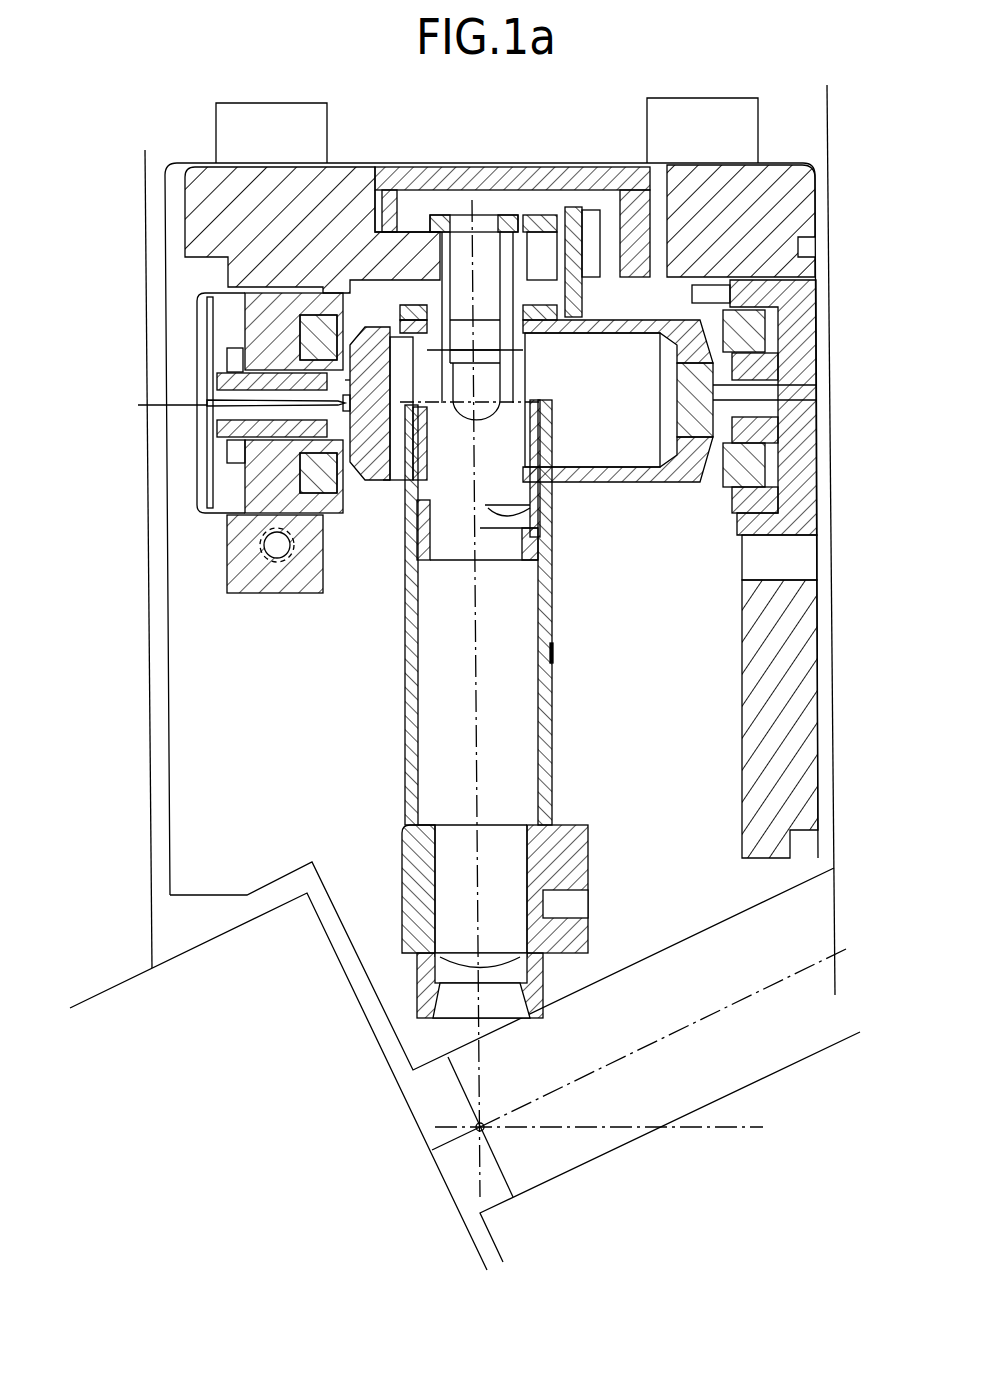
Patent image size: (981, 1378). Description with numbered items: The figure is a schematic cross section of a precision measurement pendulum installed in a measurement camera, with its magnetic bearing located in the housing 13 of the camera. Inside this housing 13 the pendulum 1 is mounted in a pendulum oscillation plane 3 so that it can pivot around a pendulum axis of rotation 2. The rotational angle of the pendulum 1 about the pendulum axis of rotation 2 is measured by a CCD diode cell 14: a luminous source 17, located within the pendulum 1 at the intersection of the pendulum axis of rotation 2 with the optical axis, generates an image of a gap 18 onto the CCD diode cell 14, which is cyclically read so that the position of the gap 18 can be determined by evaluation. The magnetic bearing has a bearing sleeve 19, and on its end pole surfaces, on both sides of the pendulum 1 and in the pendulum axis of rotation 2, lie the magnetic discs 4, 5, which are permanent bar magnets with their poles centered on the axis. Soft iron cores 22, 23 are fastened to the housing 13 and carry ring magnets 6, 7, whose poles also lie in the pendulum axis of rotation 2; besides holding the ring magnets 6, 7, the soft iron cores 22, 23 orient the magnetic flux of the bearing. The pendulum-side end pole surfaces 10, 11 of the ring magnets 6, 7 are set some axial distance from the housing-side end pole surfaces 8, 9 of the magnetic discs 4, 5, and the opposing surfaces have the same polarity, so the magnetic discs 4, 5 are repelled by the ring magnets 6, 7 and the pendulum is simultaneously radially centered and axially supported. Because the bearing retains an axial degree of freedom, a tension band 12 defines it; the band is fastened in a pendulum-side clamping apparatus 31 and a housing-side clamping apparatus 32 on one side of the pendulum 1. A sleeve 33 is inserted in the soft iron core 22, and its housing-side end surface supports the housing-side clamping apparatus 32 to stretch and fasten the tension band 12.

The pendulum 1 is at (547, 700).
The pendulum axis of rotation 2 is at (560, 402).
The pendulum oscillation plane 3 is at (485, 600).
The magnetic disc 4 is at (383, 482).
The magnetic disc 5 is at (680, 467).
The ring magnet 6 is at (243, 333).
The ring magnet 7 is at (753, 332).
The housing-side end pole surface 8 is at (812, 387).
The housing-side end pole surface 9 is at (367, 380).
The pendulum-side end pole surface 10 is at (352, 290).
The pendulum-side end pole surface 11 is at (727, 504).
The tension band 12 is at (203, 422).
The housing 13 is at (753, 732).
The CCD diode cell 14 is at (483, 1122).
The luminous source 17 is at (482, 382).
The gap 18 is at (505, 517).
The bearing sleeve 19 is at (588, 333).
The soft iron core 22 is at (243, 367).
The soft iron core 23 is at (810, 360).
The pendulum-side clamping apparatus 31 is at (357, 407).
The housing-side clamping apparatus 32 is at (205, 405).
The sleeve 33 is at (227, 440).